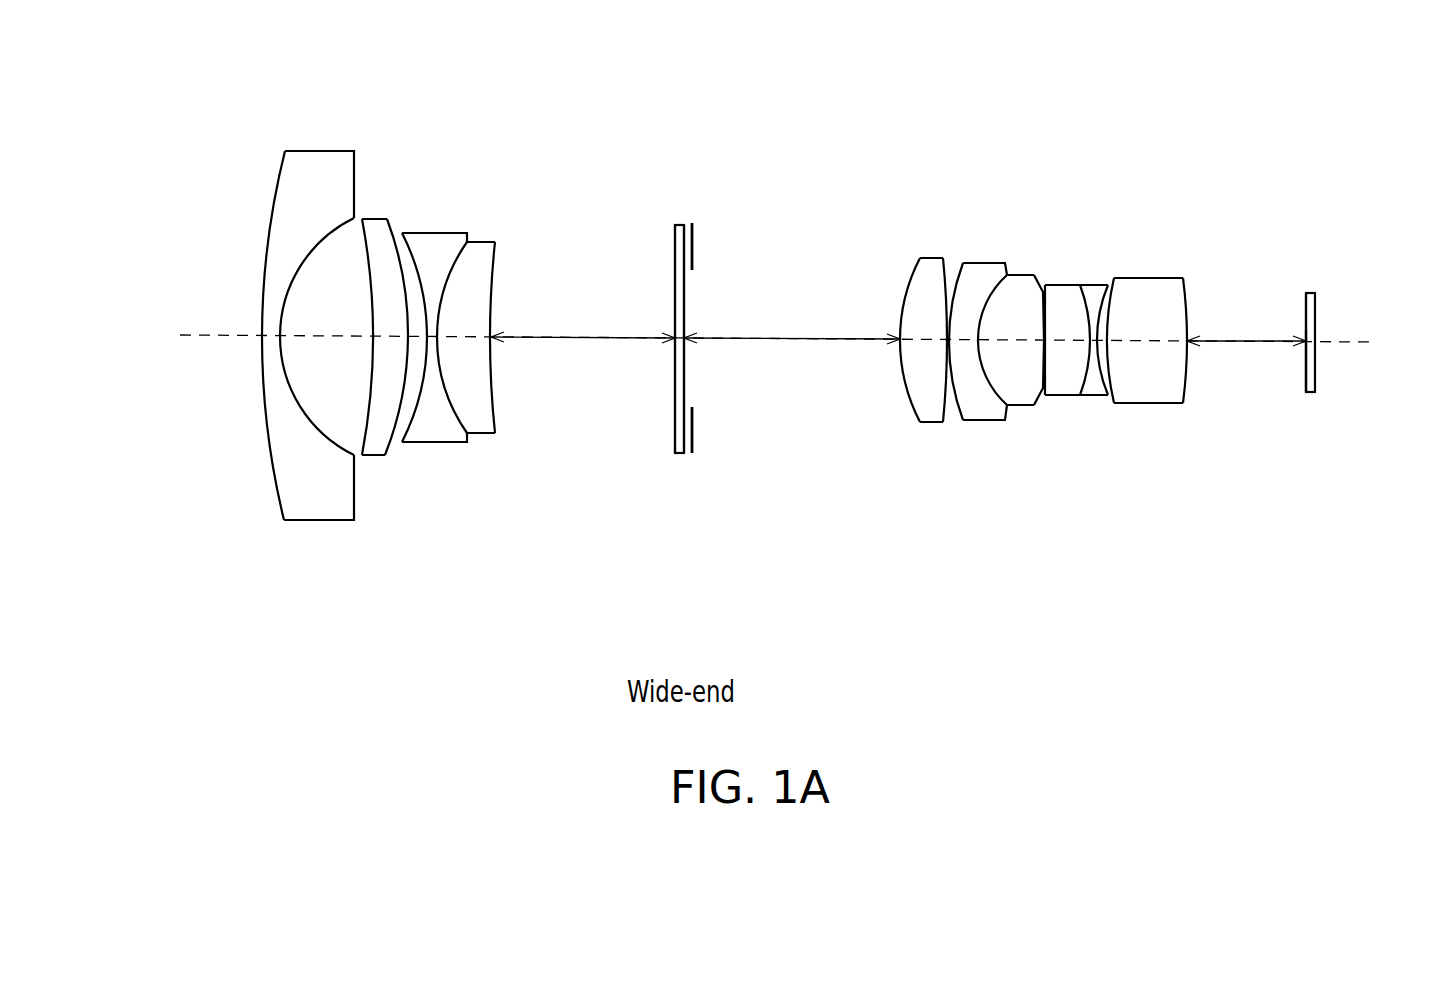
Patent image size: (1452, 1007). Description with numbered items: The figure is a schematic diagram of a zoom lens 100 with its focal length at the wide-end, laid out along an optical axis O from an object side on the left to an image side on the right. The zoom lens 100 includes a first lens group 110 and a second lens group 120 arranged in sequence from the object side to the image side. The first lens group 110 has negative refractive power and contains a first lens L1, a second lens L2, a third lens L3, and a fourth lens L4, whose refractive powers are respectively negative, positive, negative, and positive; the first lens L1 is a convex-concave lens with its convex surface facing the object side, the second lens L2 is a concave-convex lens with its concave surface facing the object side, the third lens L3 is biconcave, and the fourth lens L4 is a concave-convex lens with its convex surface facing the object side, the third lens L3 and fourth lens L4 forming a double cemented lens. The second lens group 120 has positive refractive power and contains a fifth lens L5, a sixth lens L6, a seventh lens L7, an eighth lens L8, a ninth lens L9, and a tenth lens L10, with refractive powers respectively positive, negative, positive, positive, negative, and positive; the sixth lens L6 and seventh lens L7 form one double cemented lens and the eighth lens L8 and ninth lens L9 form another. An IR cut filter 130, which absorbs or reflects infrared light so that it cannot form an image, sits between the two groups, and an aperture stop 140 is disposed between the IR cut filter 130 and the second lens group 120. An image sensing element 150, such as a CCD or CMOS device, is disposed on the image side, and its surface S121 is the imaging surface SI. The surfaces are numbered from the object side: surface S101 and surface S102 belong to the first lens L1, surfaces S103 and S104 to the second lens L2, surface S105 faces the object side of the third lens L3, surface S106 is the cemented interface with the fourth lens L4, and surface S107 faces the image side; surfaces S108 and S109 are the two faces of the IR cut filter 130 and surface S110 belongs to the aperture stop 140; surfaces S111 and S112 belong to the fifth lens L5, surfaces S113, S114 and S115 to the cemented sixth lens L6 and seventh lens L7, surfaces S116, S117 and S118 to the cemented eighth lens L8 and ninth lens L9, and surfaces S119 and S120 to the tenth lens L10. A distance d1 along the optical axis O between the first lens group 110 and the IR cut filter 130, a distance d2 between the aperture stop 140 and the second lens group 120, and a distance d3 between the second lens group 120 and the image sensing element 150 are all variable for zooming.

The zoom lens 100 is at (776, 383).
The first lens group 110 is at (492, 86).
The second lens group 120 is at (1200, 171).
The IR cut filter 130 is at (677, 243).
The aperture stop 140 is at (692, 235).
The image sensing element 150 is at (1315, 310).
The optical axis O is at (226, 330).
The imaging surface SI is at (1306, 300).
The distance d1 is at (583, 320).
The distance d2 is at (792, 321).
The distance d3 is at (1246, 324).
The first lens L1 is at (295, 185).
The second lens L2 is at (377, 233).
The third lens L3 is at (433, 253).
The fourth lens L4 is at (473, 263).
The fifth lens L5 is at (922, 277).
The sixth lens L6 is at (977, 277).
The seventh lens L7 is at (1018, 287).
The eighth lens L8 is at (1064, 303).
The ninth lens L9 is at (1090, 293).
The tenth lens L10 is at (1148, 293).
The surface S101 is at (263, 410).
The surface S102 is at (287, 377).
The surface S103 is at (371, 375).
The surface S104 is at (400, 422).
The surface S105 is at (420, 288).
The surface S106 is at (445, 380).
The surface S107 is at (490, 373).
The surface S108 is at (675, 420).
The surface S109 is at (684, 438).
The surface S110 is at (692, 417).
The surface S111 is at (908, 397).
The surface S112 is at (946, 402).
The surface S113 is at (952, 287).
The surface S114 is at (991, 380).
The surface S115 is at (1038, 402).
The surface S116 is at (1045, 293).
The surface S117 is at (1087, 375).
The surface S118 is at (1100, 358).
The surface S119 is at (1108, 293).
The surface S120 is at (1187, 363).
The surface S121 is at (1306, 366).